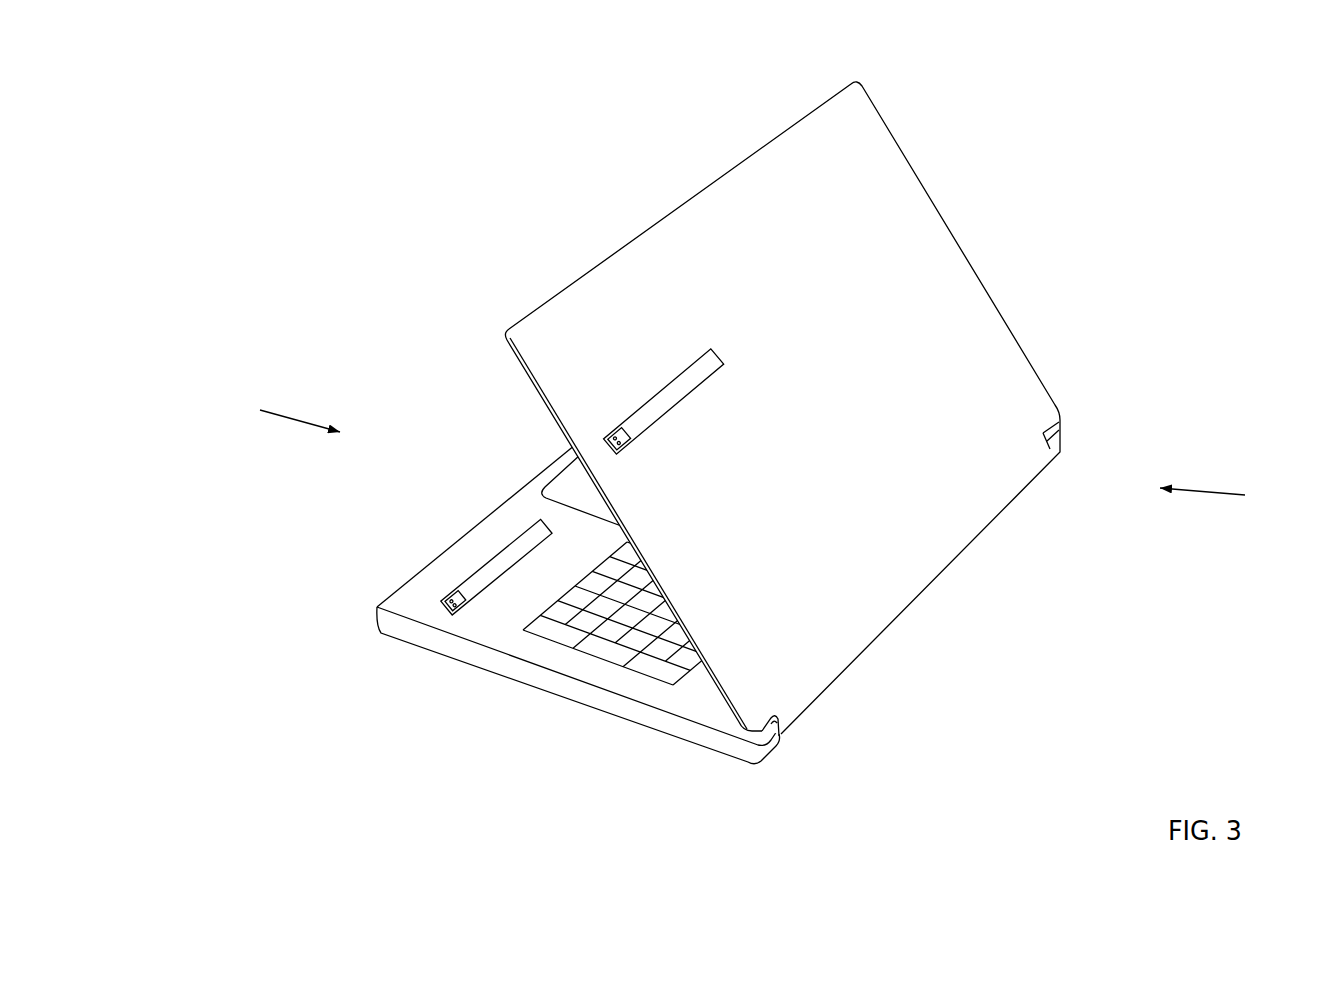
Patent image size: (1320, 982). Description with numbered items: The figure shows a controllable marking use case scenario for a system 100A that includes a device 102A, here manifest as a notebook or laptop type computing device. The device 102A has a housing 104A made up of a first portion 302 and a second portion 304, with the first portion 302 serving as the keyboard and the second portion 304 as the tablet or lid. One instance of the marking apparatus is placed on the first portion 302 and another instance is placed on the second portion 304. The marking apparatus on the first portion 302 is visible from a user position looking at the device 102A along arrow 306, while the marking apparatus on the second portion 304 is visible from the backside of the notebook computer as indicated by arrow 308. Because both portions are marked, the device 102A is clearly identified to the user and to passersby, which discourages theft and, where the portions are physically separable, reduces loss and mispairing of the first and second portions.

The system 100A is at (582, 65).
The device 102A is at (231, 97).
The housing 104A is at (527, 312).
The first portion 302 is at (400, 589).
The second portion 304 is at (595, 269).
The arrow 306 is at (278, 415).
The arrow 308 is at (1223, 499).